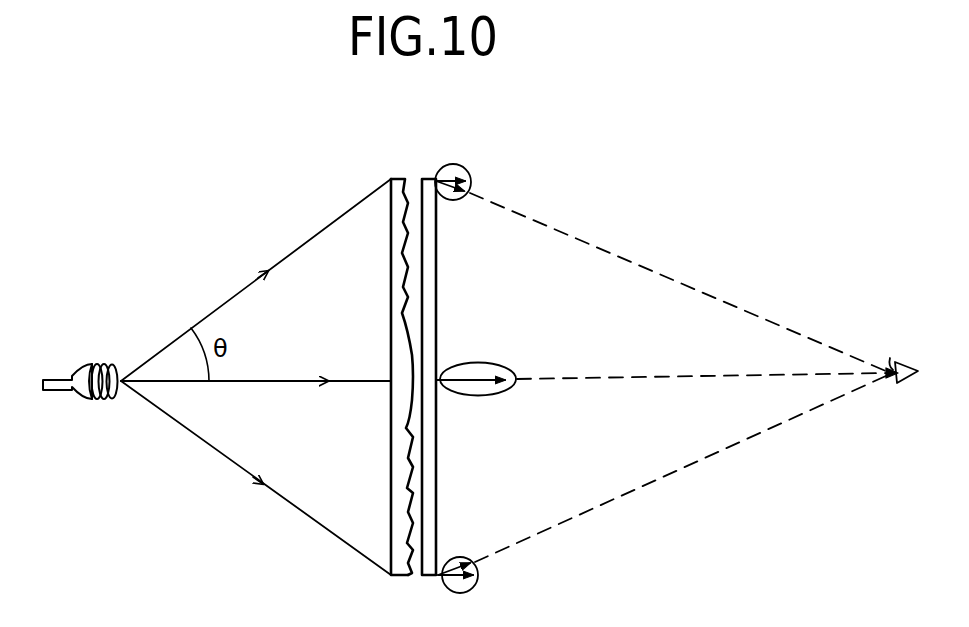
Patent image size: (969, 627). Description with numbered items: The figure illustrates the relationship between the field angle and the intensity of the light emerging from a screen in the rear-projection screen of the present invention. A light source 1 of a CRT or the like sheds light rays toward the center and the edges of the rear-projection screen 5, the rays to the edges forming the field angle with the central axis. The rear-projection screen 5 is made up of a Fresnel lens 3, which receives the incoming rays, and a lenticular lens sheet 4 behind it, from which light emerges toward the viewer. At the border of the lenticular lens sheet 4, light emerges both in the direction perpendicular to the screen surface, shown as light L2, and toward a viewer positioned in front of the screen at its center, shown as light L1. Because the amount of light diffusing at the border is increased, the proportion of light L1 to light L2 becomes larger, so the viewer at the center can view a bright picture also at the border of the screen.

The light source 1 is at (87, 352).
The Fresnel lens 3 is at (394, 181).
The lenticular lens sheet 4 is at (423, 181).
The rear-projection screen 5 is at (428, 119).
The light going toward a viewer L1 is at (447, 197).
The light emerging perpendicular to the screen surface L2 is at (445, 163).